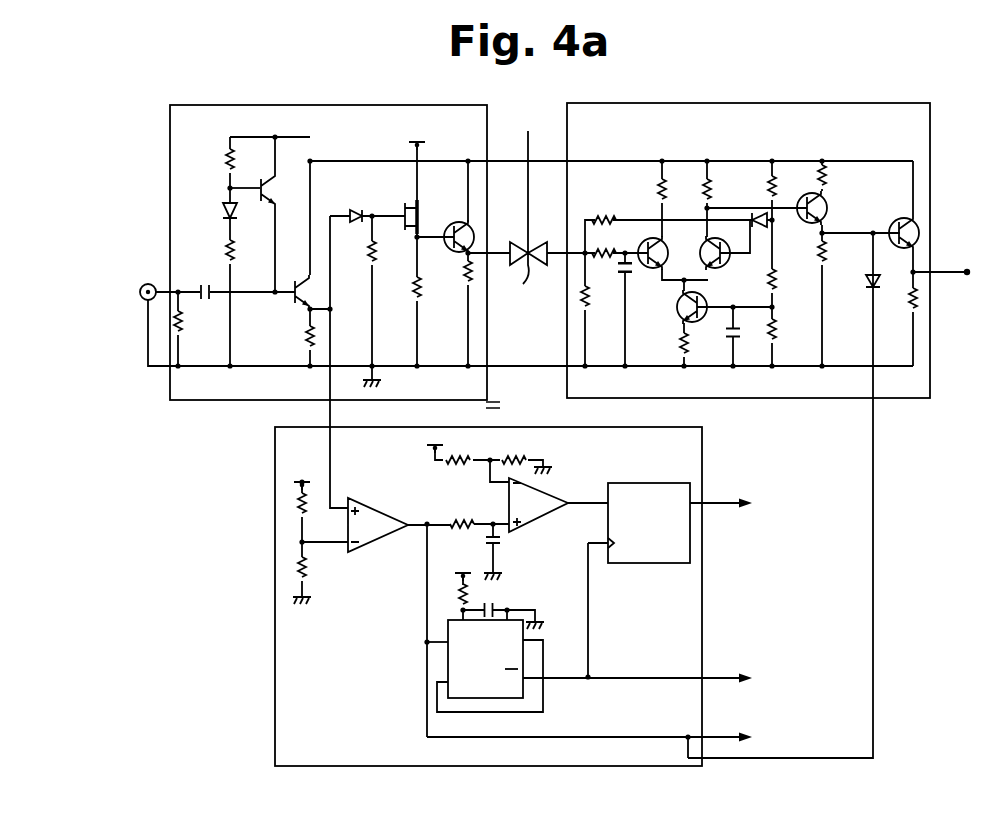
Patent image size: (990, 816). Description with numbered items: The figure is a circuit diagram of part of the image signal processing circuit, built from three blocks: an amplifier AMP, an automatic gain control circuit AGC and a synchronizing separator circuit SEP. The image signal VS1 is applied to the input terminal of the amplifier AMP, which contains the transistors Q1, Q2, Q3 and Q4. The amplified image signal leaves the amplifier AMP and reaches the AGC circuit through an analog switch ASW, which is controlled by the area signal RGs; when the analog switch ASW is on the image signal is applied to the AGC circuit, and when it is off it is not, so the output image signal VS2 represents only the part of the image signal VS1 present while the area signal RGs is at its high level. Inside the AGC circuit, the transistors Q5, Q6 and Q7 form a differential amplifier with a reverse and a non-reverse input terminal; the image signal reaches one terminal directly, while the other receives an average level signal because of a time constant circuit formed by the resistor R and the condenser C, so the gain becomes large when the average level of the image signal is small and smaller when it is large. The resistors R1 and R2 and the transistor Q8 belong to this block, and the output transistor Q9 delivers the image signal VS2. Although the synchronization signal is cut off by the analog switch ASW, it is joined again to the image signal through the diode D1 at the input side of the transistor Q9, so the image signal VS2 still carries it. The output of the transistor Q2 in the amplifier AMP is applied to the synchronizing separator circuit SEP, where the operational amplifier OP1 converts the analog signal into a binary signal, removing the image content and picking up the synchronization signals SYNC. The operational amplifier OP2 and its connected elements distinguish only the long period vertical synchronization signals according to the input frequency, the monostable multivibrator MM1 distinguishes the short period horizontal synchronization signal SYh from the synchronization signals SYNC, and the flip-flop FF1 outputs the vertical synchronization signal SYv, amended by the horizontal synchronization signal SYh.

The amplifier AMP is at (262, 105).
The AGC circuit AGC is at (727, 103).
The synchronizing separator circuit SEP is at (275, 573).
The image signal VS1 is at (141, 280).
The image signal VS2 is at (969, 264).
The area signal RGs is at (531, 175).
The analog switch ASW is at (536, 282).
The transistor Q1 is at (283, 195).
The transistor Q2 is at (296, 283).
The transistor Q3 is at (402, 206).
The transistor Q4 is at (453, 227).
The transistor Q5 is at (652, 266).
The transistor Q6 is at (677, 311).
The transistor Q7 is at (725, 264).
The transistor Q8 is at (807, 199).
The transistor Q9 is at (899, 224).
The resistor R is at (604, 244).
The condenser C is at (615, 271).
The resistor R1 is at (597, 299).
The resistor R2 is at (757, 188).
The diode D1 is at (784, 485).
The operational amplifier OP1 is at (387, 506).
The operational amplifier OP2 is at (546, 517).
The flip-flop FF1 is at (644, 483).
The monostable multivibrator MM1 is at (448, 662).
The vertical synchronization signal SYv is at (721, 495).
The horizontal synchronization signal SYh is at (637, 668).
The synchronization signals SYNC is at (591, 737).